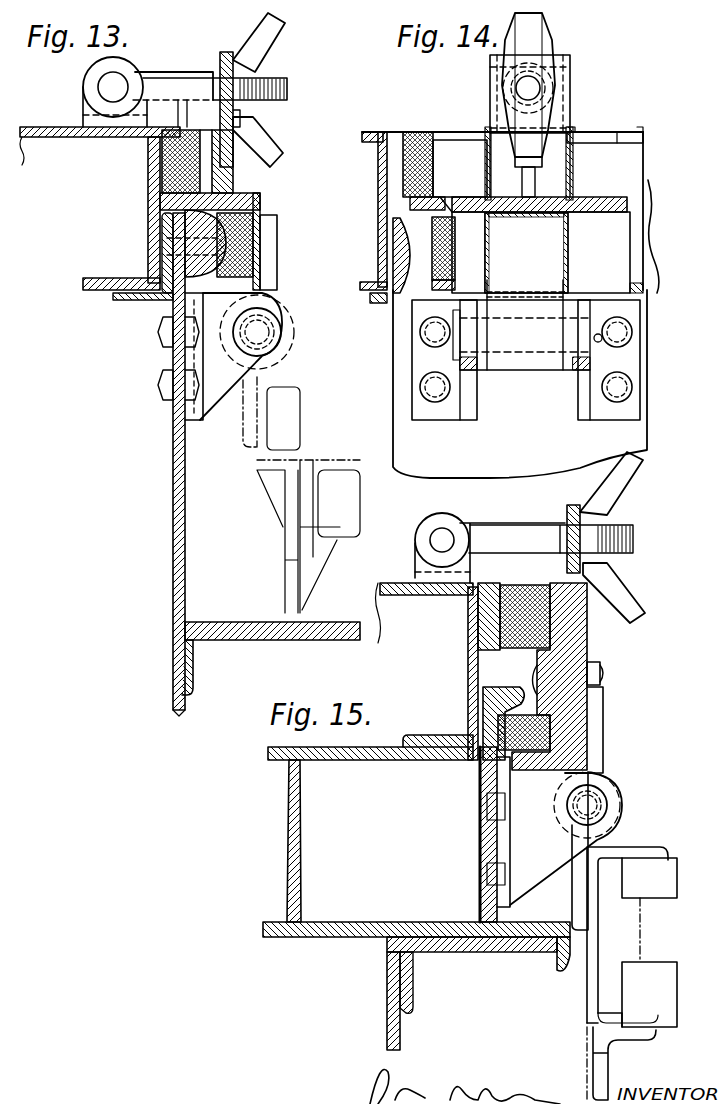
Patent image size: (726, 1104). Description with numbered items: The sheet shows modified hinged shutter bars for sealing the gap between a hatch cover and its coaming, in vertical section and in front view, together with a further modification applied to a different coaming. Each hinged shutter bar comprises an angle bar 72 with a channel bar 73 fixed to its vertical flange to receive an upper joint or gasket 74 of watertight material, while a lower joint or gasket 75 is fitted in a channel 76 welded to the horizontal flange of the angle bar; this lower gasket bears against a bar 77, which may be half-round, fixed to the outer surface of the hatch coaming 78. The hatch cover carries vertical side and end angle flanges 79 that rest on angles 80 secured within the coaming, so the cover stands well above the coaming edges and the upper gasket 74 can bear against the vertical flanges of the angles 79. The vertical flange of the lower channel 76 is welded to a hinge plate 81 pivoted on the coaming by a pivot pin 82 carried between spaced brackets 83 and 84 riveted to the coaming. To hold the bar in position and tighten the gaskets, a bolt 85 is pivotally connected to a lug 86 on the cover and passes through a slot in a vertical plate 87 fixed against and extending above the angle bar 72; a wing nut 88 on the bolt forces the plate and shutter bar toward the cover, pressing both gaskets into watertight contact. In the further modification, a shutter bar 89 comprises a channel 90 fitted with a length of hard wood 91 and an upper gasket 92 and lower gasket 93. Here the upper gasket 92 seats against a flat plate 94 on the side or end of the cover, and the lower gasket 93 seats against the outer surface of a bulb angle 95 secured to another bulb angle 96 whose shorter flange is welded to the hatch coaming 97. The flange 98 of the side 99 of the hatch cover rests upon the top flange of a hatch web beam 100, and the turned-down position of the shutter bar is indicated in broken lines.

In FIG. 13, the angle bar 72 is at (233, 180).
In FIG. 14, the angle bar 72 is at (458, 173).
In FIG. 13, the channel bar 73 is at (173, 200).
In FIG. 14, the channel bar 73 is at (518, 204).
In FIG. 13, the joint or gasket 74 is at (173, 182).
In FIG. 14, the joint or gasket 74 is at (413, 157).
In FIG. 13, the lower joint or gasket 75 is at (250, 253).
In FIG. 14, the lower joint or gasket 75 is at (432, 263).
In FIG. 13, the channel 76 is at (260, 230).
In FIG. 14, the channel 76 is at (610, 233).
In FIG. 13, the bar 77 is at (138, 298).
In FIG. 14, the bar 77 is at (643, 275).
In FIG. 13, the hatch coaming 78 is at (180, 488).
In FIG. 13, the angle flange 79 is at (153, 153).
In FIG. 14, the angle flange 79 is at (387, 167).
In FIG. 13, the angle 80 is at (113, 300).
In FIG. 14, the angle 80 is at (370, 297).
In FIG. 13, the hinge plate 81 is at (276, 322).
In FIG. 14, the hinge plate 81 is at (537, 263).
In FIG. 13, the pivot pin 82 is at (283, 347).
In FIG. 14, the pivot pin 82 is at (537, 337).
In FIG. 13, the bracket 83 is at (213, 380).
In FIG. 14, the bracket 83 is at (437, 413).
In FIG. 14, the bracket 84 is at (617, 413).
In FIG. 13, the bolt 85 is at (168, 87).
In FIG. 14, the bolt 85 is at (537, 90).
In FIG. 13, the lug 86 is at (93, 110).
In FIG. 14, the lug 86 is at (560, 63).
In FIG. 13, the vertical plate 87 is at (230, 137).
In FIG. 14, the vertical plate 87 is at (557, 160).
In FIG. 13, the wing nut 88 is at (267, 33).
In FIG. 14, the wing nut 88 is at (530, 37).
In FIG. 15, the shutter bar 89 is at (611, 676).
In FIG. 15, the channel 90 is at (583, 650).
In FIG. 15, the length of hard wood 91 is at (563, 723).
In FIG. 15, the upper gasket 92 is at (503, 617).
In FIG. 15, the lower gasket 93 is at (470, 760).
In FIG. 15, the flat plate 94 is at (490, 583).
In FIG. 15, the bulb angle 95 is at (480, 790).
In FIG. 15, the bulb angle 96 is at (481, 940).
In FIG. 15, the hatch coaming 97 is at (390, 1028).
In FIG. 15, the flange 98 is at (437, 740).
In FIG. 15, the side of the hatch cover 99 is at (473, 663).
In FIG. 15, the hatch web beam 100 is at (347, 873).